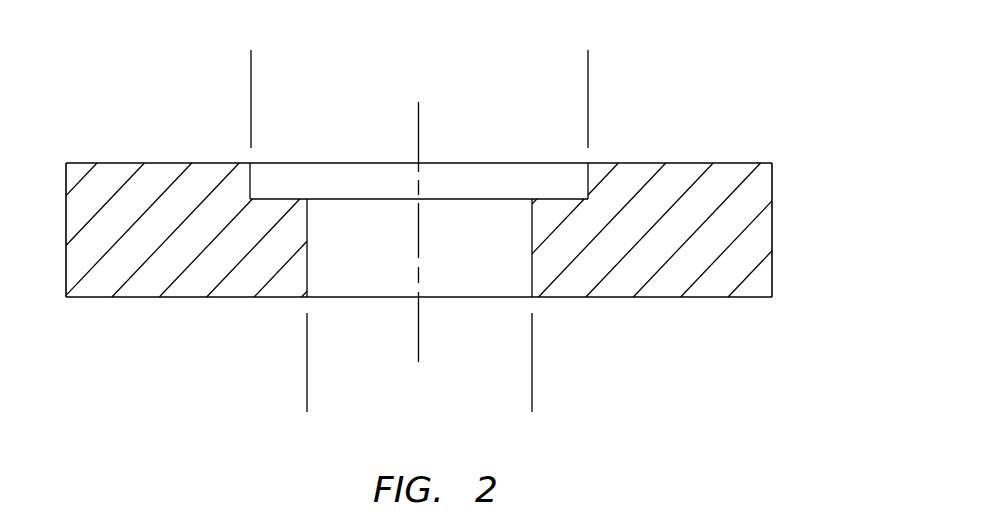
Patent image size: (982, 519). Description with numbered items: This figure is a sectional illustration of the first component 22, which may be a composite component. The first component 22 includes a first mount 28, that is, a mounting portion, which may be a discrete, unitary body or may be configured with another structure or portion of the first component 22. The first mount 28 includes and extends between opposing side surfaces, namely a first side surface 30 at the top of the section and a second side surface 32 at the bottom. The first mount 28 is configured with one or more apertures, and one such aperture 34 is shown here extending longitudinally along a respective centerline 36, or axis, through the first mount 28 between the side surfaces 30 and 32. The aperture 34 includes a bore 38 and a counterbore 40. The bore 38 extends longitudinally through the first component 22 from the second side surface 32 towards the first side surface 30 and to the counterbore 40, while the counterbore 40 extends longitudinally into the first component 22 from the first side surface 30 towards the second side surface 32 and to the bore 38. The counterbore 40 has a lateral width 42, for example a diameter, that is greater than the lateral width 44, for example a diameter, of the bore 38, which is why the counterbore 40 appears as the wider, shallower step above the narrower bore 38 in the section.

The first component 22 is at (742, 95).
The first mount 28 is at (772, 265).
The first side surface 30 is at (95, 170).
The second side surface 32 is at (105, 297).
The aperture 34 is at (510, 142).
The centerline 36 is at (418, 343).
The bore 38 is at (381, 265).
The counterbore 40 is at (343, 192).
The lateral width of the counterbore 42 is at (572, 59).
The lateral width of the bore 44 is at (516, 403).